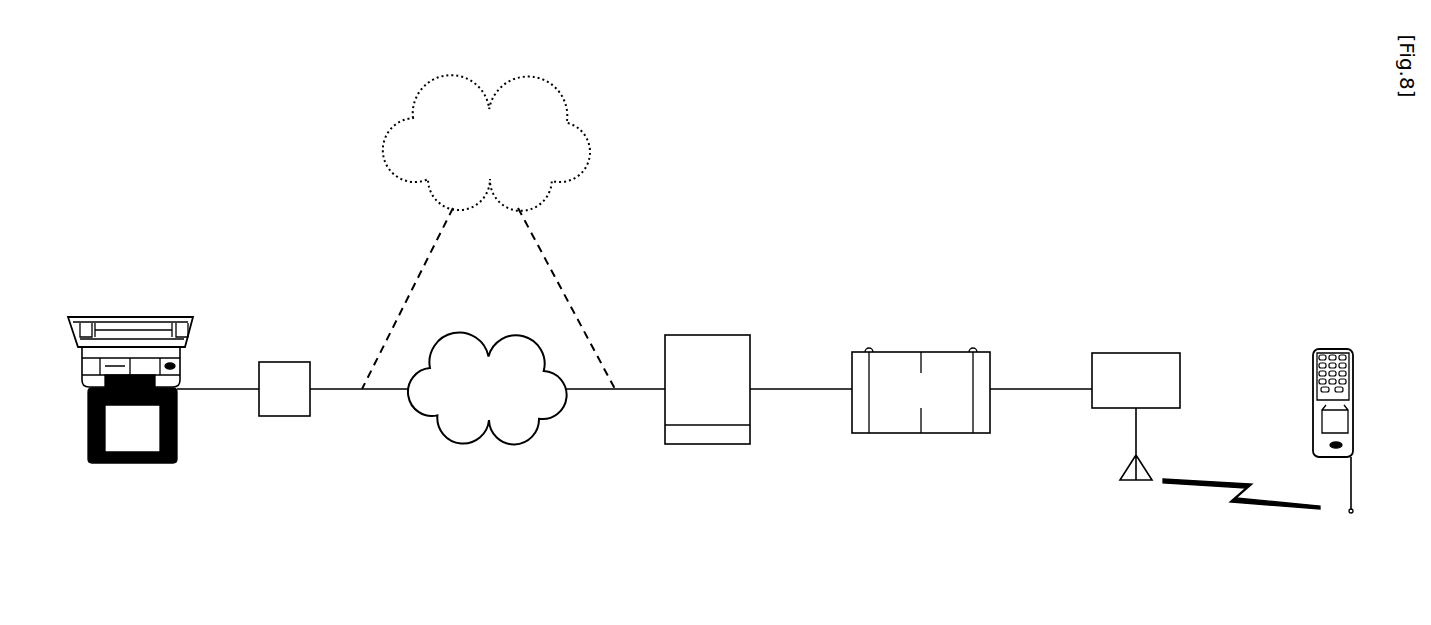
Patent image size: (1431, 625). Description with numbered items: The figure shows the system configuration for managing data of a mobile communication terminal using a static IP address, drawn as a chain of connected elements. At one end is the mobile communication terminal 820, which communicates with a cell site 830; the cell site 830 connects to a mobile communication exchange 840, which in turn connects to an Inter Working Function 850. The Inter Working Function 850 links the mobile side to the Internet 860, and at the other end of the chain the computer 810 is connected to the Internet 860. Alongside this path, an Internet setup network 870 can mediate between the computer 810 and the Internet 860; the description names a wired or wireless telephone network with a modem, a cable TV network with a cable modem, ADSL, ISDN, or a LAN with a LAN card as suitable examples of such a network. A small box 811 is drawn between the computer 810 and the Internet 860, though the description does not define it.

The computer 810 is at (133, 463).
The modem 811 is at (285, 416).
The mobile communication terminal 820 is at (1352, 512).
The cell site 830 is at (1128, 480).
The mobile communication exchange 840 is at (885, 433).
The Inter Working Function 850 is at (708, 444).
The Internet 860 is at (465, 446).
The Internet setup network 870 is at (383, 138).